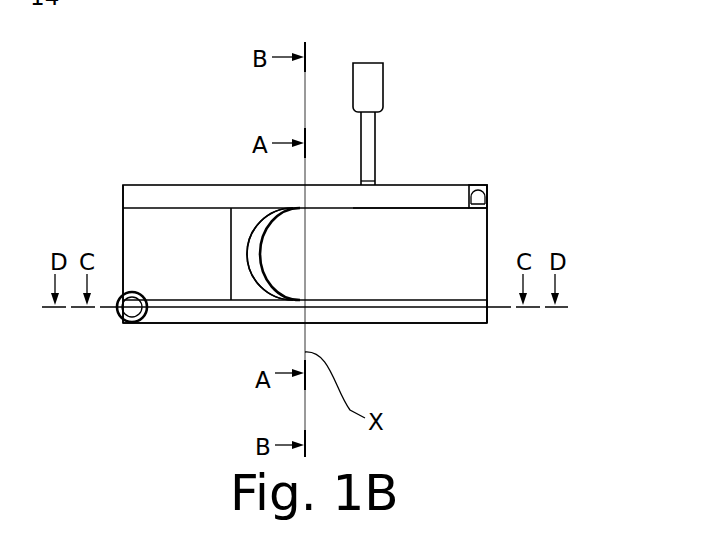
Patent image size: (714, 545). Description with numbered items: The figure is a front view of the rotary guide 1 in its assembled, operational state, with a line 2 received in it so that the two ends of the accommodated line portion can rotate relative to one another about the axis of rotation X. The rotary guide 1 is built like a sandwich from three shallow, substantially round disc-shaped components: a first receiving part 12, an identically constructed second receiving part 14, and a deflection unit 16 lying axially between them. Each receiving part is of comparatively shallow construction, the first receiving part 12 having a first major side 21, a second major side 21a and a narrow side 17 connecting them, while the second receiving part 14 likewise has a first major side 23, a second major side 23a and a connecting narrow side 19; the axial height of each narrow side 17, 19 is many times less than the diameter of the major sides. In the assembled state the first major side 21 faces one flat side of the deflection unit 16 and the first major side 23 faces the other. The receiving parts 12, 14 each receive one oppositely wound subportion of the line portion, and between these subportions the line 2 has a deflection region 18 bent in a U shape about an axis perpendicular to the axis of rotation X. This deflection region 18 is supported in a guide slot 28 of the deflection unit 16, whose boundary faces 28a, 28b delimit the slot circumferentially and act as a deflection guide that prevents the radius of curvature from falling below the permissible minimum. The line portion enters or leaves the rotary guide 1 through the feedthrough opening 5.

The rotary guide 1 is at (440, 50).
The line 2 is at (386, 121).
The feedthrough opening 5 is at (128, 312).
The first receiving part 12 is at (167, 193).
The second receiving part 14 is at (175, 312).
The deflection unit 16 is at (478, 233).
The narrow side of first receiving part 17 is at (123, 197).
The deflection region 18 is at (268, 212).
The narrow side of second receiving part 19 is at (487, 315).
The first major side of first receiving part 21 is at (412, 213).
The second major side of first receiving part 21a is at (458, 185).
The first major side of second receiving part 23 is at (373, 293).
The second major side of second receiving part 23a is at (445, 323).
The guide slot 28 is at (236, 288).
The boundary face of guide slot 28a is at (260, 277).
The boundary face of guide slot 28b is at (224, 260).